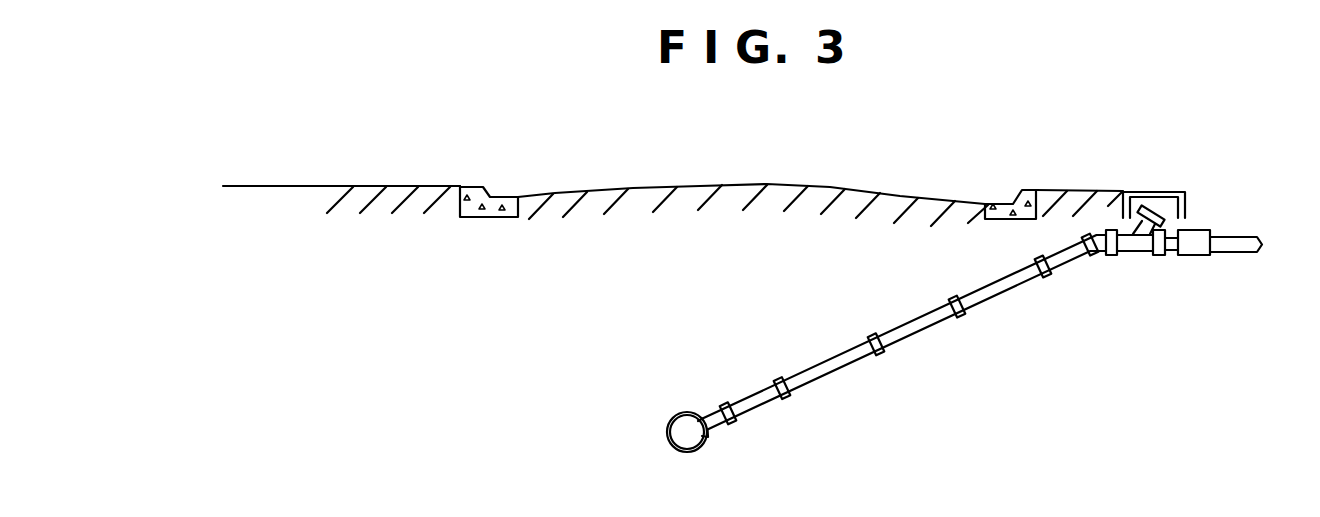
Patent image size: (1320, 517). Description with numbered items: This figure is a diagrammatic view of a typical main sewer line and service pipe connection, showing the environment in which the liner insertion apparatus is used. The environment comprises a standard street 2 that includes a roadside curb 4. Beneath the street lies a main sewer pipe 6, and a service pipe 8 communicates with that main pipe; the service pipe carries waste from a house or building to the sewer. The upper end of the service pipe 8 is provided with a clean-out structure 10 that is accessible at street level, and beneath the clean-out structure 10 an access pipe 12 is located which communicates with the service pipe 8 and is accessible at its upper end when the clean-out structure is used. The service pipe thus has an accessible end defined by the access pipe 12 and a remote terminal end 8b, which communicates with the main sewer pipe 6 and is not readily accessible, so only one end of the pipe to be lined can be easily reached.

The street 2 is at (690, 188).
The roadside curb 4 is at (483, 187).
The main sewer pipe 6 is at (687, 455).
The service pipe 8 is at (830, 365).
The remote terminal end 8b is at (704, 427).
The clean-out structure 10 is at (1150, 192).
The access pipe 12 is at (1158, 212).